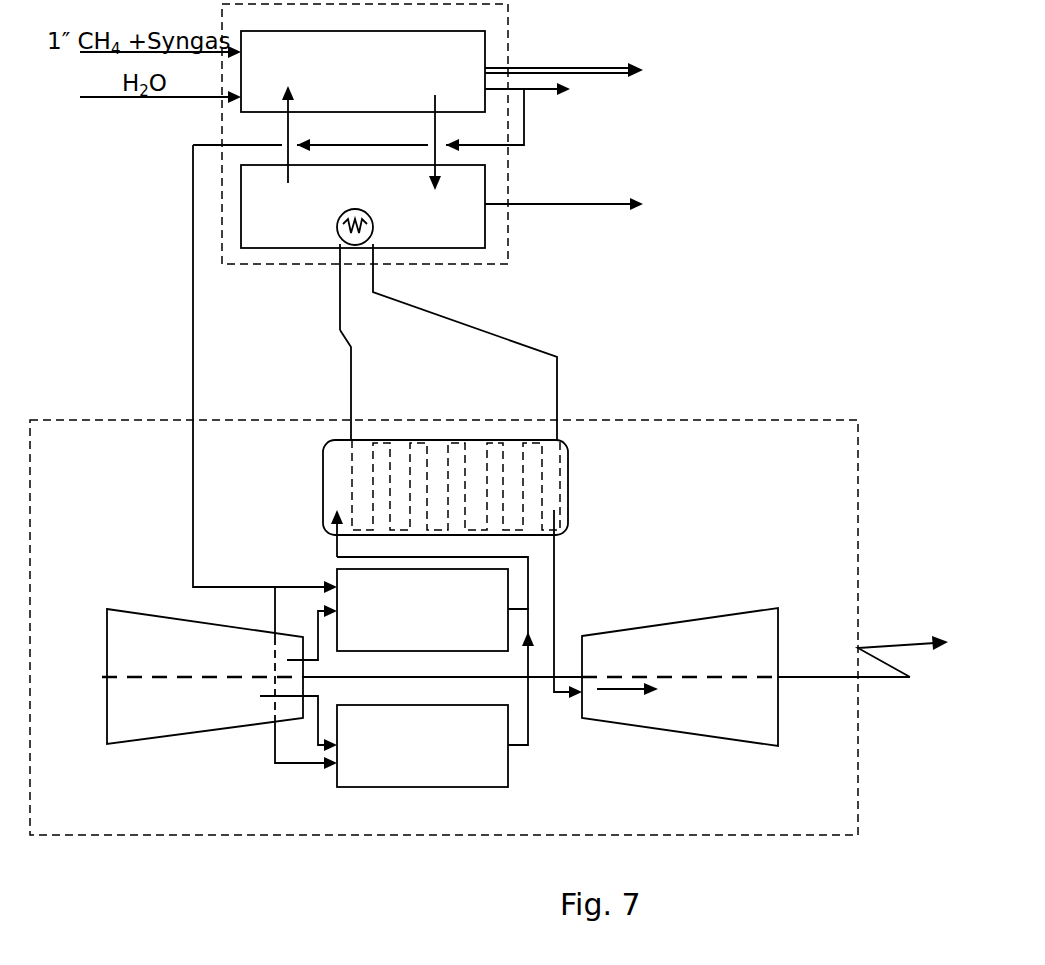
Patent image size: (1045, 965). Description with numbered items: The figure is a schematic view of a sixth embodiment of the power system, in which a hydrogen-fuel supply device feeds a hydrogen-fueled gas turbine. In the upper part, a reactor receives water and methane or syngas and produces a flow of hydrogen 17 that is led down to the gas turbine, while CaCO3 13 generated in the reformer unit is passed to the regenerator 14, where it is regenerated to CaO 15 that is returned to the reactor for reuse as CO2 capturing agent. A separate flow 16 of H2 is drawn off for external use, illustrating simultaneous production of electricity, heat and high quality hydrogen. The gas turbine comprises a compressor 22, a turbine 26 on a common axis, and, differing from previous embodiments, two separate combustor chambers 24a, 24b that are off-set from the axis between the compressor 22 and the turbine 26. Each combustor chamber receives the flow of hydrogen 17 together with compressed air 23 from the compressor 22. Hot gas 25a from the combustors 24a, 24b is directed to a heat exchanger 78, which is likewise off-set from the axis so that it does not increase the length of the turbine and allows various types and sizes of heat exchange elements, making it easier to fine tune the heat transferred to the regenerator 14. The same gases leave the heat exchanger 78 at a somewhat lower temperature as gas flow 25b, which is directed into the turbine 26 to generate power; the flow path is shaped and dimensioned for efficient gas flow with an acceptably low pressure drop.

The CaCO3 13 is at (476, 139).
The regenerator 14 is at (442, 302).
The CaO 15 is at (310, 134).
The flow of H2 for external use 16 is at (611, 91).
The flow of hydrogen 17 is at (248, 457).
The compressor 22 is at (205, 676).
The compressed air 23 is at (273, 678).
The first combustor chamber 24a is at (422, 610).
The second combustor chamber 24b is at (422, 746).
The hot gas 25a is at (542, 682).
The gas flow 25b is at (579, 604).
The turbine 26 is at (680, 677).
The heat exchanger 78 is at (445, 524).